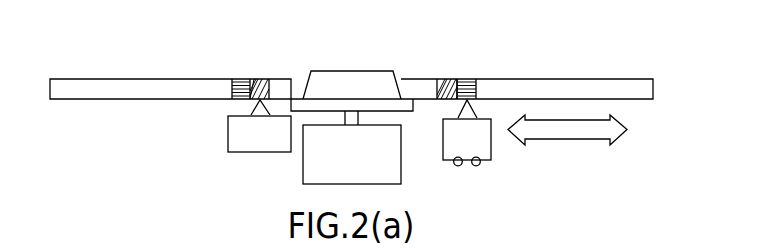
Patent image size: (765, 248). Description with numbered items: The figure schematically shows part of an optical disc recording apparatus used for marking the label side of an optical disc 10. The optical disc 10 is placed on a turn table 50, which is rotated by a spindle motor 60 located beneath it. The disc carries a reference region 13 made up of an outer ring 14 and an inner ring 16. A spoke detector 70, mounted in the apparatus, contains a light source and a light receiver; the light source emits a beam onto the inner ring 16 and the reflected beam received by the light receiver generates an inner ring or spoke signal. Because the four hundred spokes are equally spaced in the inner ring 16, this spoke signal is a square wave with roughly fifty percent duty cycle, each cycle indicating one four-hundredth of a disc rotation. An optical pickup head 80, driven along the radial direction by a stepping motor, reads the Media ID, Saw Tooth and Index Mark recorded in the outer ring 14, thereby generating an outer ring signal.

The optical disc 10 is at (576, 79).
The reference region 13 is at (232, 77).
The outer ring 14 is at (466, 79).
The inner ring 16 is at (448, 79).
The turn table 50 is at (341, 98).
The spindle motor 60 is at (342, 163).
The spoke detector 70 is at (250, 146).
The optical pickup head 80 is at (456, 148).